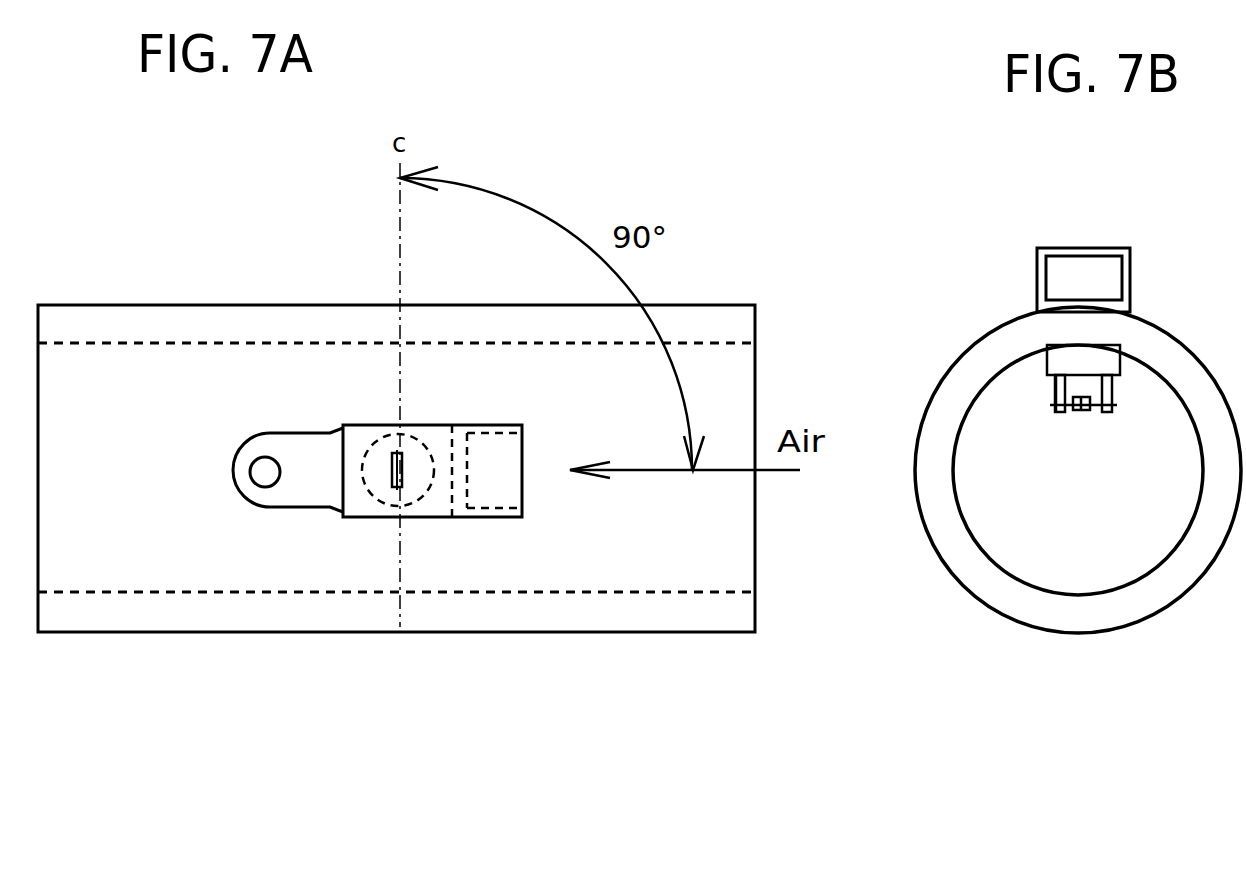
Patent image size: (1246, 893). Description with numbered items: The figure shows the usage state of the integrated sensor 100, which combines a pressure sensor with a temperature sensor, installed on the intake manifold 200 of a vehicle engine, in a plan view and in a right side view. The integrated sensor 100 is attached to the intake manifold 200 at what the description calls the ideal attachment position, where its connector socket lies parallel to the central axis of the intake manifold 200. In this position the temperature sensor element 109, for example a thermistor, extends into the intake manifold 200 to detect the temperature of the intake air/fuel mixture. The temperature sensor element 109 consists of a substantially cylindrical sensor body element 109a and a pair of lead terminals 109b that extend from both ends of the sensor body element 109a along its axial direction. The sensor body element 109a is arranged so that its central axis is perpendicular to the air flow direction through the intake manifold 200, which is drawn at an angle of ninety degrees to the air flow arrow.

In FIG. 7A, the integrated sensor 100 is at (527, 527).
In FIG. 7B, the integrated sensor 100 is at (1153, 250).
In FIG. 7A, the intake manifold 200 is at (133, 375).
In FIG. 7B, the intake manifold 200 is at (965, 388).
In FIG. 7A, the temperature sensor element 109 is at (501, 611).
In FIG. 7B, the temperature sensor element 109 is at (1064, 585).
In FIG. 7A, the sensor body element 109a is at (404, 488).
In FIG. 7B, the sensor body element 109a is at (1078, 412).
In FIG. 7A, the lead terminals 109b is at (415, 482).
In FIG. 7B, the lead terminals 109b is at (1058, 412).